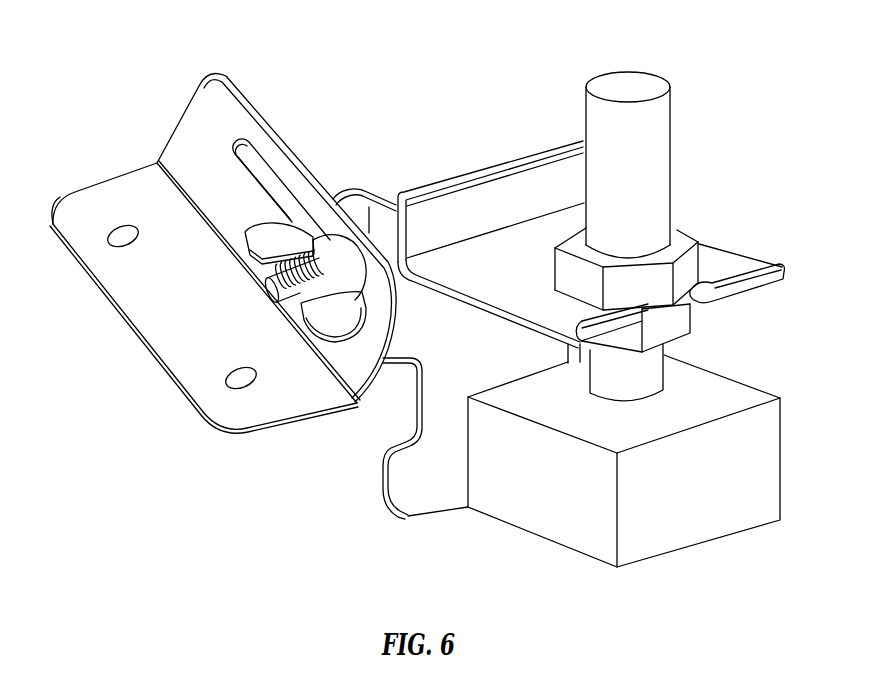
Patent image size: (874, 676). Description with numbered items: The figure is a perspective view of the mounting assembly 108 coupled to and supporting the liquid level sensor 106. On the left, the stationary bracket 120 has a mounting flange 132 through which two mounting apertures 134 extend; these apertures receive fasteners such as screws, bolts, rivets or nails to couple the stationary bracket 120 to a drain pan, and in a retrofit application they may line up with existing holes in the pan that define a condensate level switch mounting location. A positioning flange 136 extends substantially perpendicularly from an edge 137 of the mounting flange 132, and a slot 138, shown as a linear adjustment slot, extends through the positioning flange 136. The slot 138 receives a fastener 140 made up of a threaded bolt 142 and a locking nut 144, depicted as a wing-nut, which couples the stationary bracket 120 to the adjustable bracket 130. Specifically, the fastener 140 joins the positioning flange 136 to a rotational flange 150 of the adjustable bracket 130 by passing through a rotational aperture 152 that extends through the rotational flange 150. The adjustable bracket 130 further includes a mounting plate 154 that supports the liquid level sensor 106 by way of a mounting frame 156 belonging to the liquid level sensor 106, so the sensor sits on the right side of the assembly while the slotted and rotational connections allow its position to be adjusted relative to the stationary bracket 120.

The liquid level sensor 106 is at (743, 360).
The mounting assembly 108 is at (397, 70).
The stationary bracket 120 is at (121, 320).
The adjustable bracket 130 is at (447, 498).
The mounting flange 132 is at (90, 200).
The mounting apertures 134 is at (112, 244).
The positioning flange 136 is at (220, 98).
The edge 137 is at (160, 160).
The slot 138 is at (253, 140).
The fastener 140 is at (357, 352).
The threaded bolt 142 is at (265, 291).
The locking nut 144 is at (268, 240).
The rotational flange 150 is at (353, 194).
The rotational aperture 152 is at (380, 229).
The mounting plate 154 is at (413, 506).
The mounting frame 156 is at (563, 146).